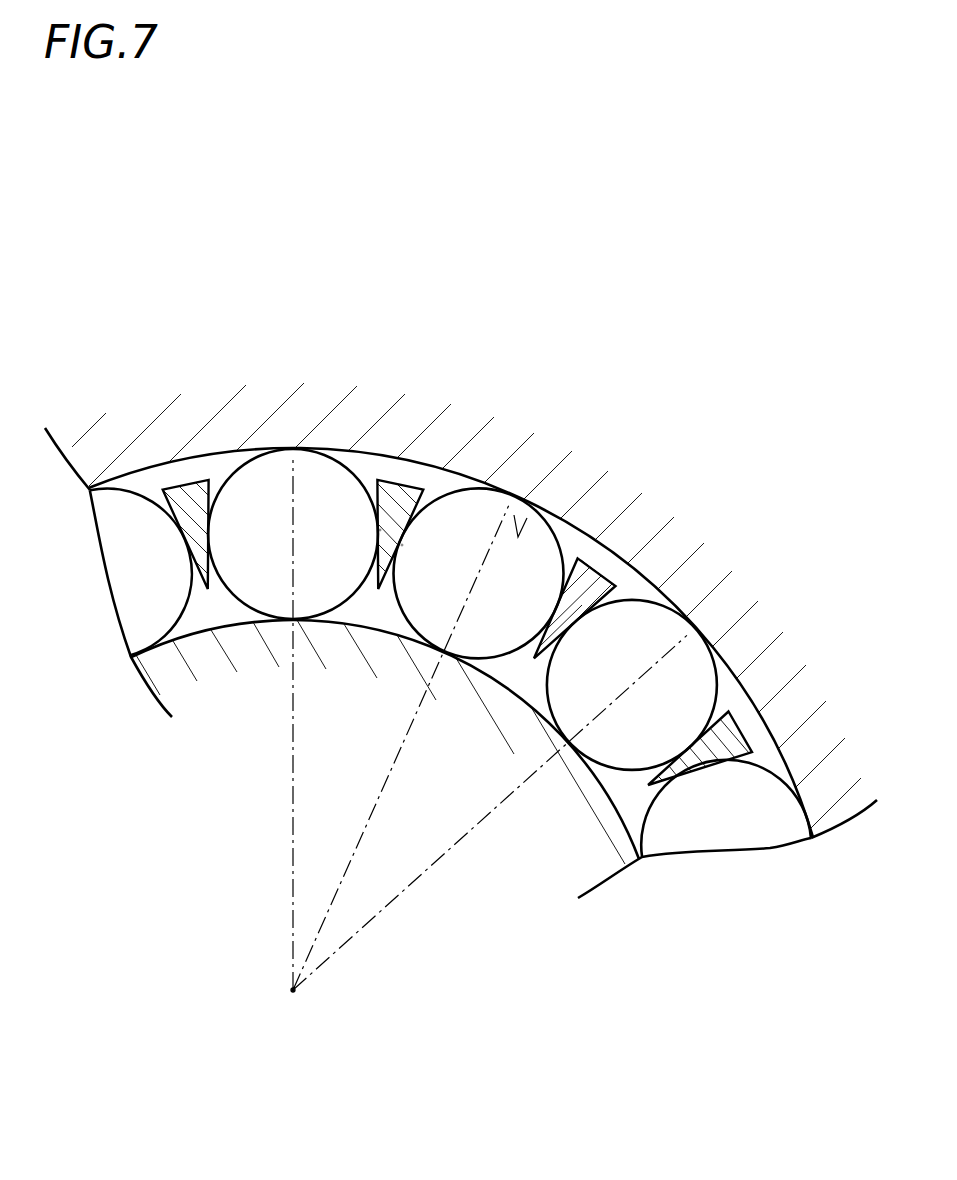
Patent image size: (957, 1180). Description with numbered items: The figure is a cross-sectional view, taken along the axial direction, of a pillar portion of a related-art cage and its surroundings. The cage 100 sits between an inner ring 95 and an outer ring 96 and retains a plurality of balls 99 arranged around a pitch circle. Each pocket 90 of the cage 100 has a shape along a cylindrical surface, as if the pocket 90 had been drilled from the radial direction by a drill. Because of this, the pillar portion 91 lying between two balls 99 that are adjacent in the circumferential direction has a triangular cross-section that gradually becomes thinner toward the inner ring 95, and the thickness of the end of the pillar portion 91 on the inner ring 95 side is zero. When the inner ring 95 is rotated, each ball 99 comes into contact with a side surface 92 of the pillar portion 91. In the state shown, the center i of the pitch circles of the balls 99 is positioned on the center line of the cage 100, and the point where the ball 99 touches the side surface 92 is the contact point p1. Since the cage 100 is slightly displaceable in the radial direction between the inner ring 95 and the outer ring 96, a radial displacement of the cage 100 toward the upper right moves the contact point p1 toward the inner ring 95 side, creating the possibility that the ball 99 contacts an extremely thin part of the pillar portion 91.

The pocket 90 is at (520, 512).
The pillar portion 91 is at (398, 483).
The side surface 92 is at (220, 492).
The inner ring 95 is at (226, 663).
The outer ring 96 is at (167, 417).
The ball 99 is at (303, 447).
The cage 100 is at (600, 585).
The contact point p1 is at (382, 528).
The center of pitch circles i is at (290, 990).